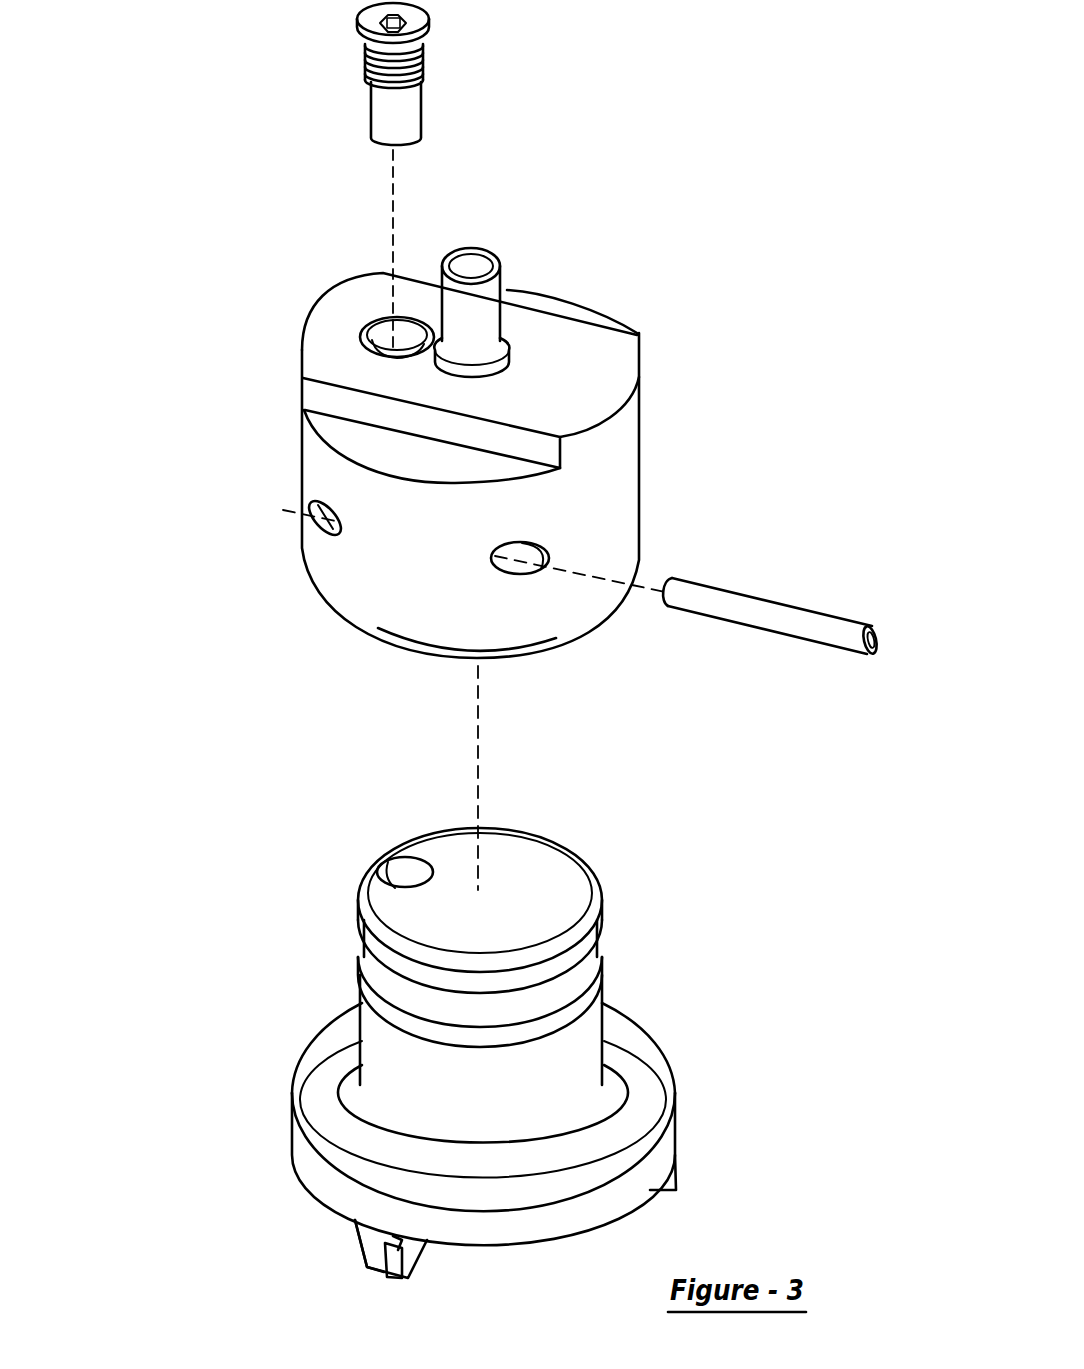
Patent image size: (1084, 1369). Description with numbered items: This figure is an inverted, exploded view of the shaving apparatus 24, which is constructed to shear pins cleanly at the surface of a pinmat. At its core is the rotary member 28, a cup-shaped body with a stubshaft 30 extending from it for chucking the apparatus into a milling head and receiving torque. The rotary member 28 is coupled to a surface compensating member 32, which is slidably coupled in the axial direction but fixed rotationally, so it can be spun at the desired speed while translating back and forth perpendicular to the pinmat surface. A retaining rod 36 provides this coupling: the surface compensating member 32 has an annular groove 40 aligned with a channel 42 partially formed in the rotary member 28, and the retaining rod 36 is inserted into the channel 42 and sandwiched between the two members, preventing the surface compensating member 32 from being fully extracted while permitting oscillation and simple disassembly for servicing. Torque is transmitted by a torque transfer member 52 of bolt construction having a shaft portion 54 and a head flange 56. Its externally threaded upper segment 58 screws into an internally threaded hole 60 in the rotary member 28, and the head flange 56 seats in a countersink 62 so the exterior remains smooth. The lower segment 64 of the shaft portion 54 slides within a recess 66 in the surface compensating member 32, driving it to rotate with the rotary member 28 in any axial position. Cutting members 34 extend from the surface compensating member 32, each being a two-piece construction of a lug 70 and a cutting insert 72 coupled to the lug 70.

The shaving apparatus 24 is at (160, 118).
The rotary member 28 is at (318, 314).
The stubshaft 30 is at (481, 249).
The surface compensating member 32 is at (453, 827).
The cutting member 34 is at (683, 1197).
The retaining rod 36 is at (840, 618).
The annular groove 40 is at (603, 950).
The channel 42 is at (306, 512).
The torque transfer member 52 is at (290, 84).
The shaft portion 54 is at (490, 28).
The head flange 56 is at (362, 14).
The upper segment 58 is at (440, 30).
The internally threaded hole 60 is at (383, 320).
The countersink 62 is at (408, 320).
The lower segment 64 is at (440, 78).
The recess 66 is at (392, 867).
The lug 70 is at (368, 1267).
The cutting insert 72 is at (409, 1278).